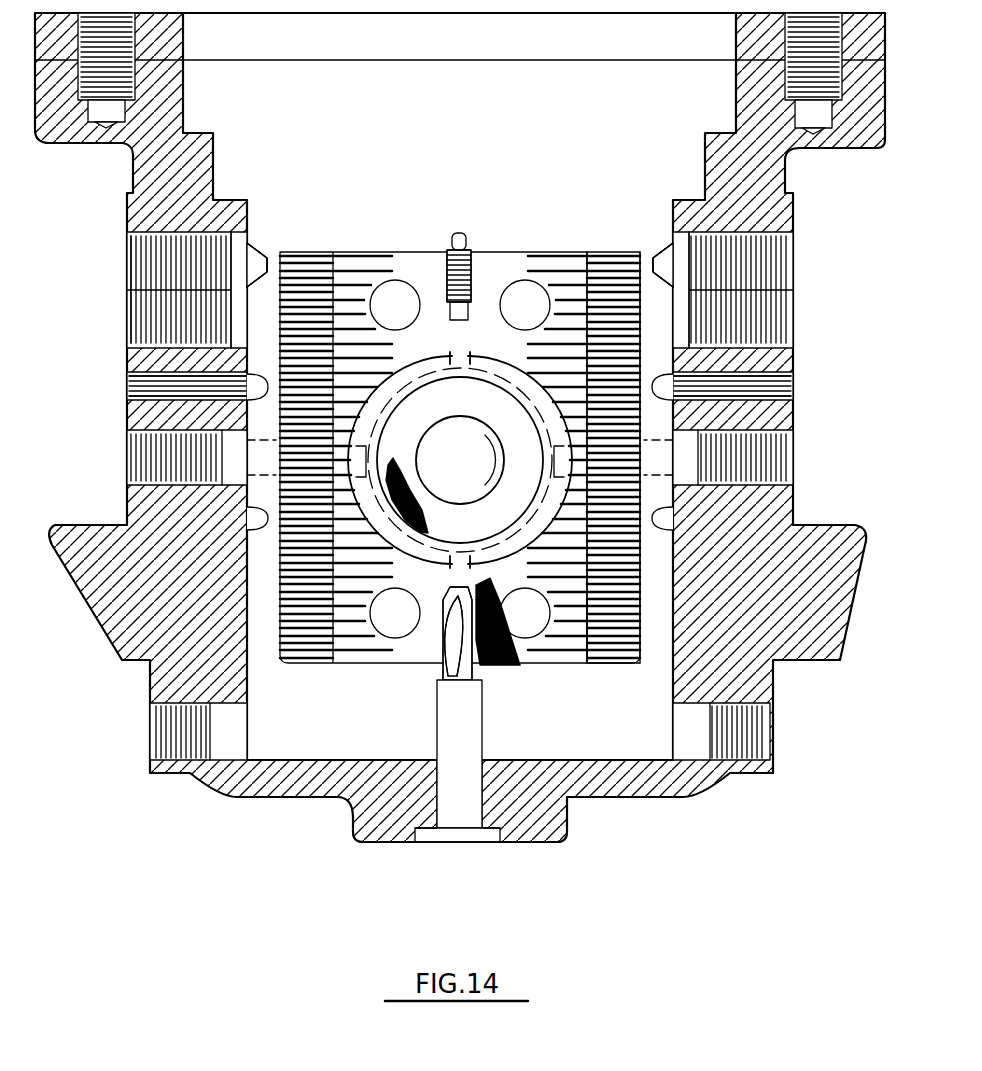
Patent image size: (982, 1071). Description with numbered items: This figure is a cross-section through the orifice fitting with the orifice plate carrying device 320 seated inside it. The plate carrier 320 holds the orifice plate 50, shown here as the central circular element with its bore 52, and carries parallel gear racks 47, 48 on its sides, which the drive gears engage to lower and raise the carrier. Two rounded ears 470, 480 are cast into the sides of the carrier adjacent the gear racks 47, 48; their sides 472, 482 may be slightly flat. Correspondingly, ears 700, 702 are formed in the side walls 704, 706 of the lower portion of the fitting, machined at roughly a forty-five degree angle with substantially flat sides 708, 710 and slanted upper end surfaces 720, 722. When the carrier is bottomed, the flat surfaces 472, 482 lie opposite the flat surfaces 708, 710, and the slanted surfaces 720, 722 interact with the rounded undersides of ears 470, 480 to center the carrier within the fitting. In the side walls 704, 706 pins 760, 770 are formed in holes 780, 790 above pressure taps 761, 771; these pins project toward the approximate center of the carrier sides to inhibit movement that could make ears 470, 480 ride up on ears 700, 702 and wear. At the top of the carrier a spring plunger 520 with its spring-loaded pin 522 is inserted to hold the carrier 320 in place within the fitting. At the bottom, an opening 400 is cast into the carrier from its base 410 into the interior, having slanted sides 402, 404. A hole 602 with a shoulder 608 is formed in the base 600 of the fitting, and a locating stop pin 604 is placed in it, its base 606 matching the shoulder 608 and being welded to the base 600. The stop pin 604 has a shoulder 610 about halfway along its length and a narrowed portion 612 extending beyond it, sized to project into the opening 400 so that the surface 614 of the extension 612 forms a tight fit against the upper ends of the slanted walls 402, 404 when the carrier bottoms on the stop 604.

The orifice plate carrying device 320 is at (330, 678).
The ear 702 is at (255, 275).
The flat side 482 is at (230, 287).
The ear 700 is at (665, 275).
The flat side 472 is at (690, 288).
The upper end surface 722 is at (256, 250).
The flat side 710 is at (268, 262).
The upper end surface 720 is at (665, 250).
The flat side 708 is at (654, 262).
The hole 790 is at (228, 378).
The pin 770 is at (228, 389).
The hole 780 is at (692, 380).
The pin 760 is at (692, 390).
The pressure tap 771 is at (228, 458).
The pressure tap 761 is at (692, 458).
The side wall 706 is at (258, 504).
The side wall 704 is at (662, 505).
The ear 480 is at (282, 254).
The gear rack 48 is at (372, 256).
The gear rack 47 is at (578, 256).
The ear 470 is at (642, 255).
The base 410 is at (574, 667).
The spring-loaded pin 522 is at (458, 233).
The spring plunger 520 is at (472, 256).
The surface 614 is at (490, 590).
The orifice plate 50 is at (512, 424).
The shaft bore 52 is at (486, 494).
The opening 400 is at (445, 683).
The slanted side 404 is at (441, 672).
The shoulder 610 is at (456, 692).
The narrowed portion 612 is at (468, 680).
The slanted side 402 is at (476, 660).
The locating stop pin 604 is at (457, 776).
The base 600 is at (445, 842).
The base 606 is at (440, 838).
The shoulder 608 is at (482, 836).
The hole 602 is at (470, 833).